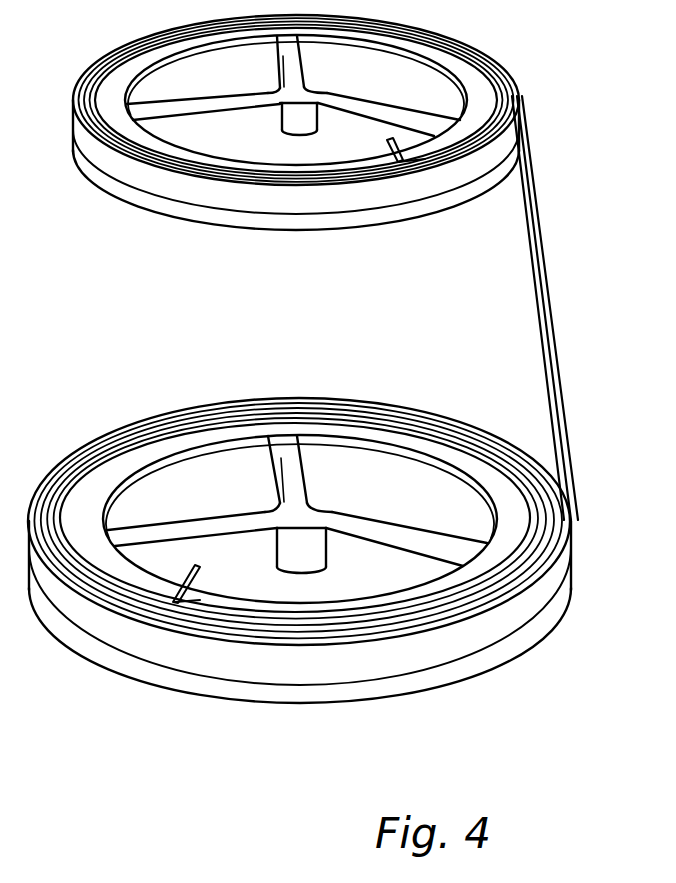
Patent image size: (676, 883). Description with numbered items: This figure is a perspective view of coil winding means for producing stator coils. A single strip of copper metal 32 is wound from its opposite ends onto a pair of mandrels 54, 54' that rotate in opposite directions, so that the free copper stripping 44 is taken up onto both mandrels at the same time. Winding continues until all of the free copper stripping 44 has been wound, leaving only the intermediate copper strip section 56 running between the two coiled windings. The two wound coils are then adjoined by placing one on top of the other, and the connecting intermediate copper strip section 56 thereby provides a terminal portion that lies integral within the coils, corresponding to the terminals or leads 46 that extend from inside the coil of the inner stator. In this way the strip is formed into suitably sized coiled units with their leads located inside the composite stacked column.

The strips or ribbons of copper metal 32 is at (540, 598).
The copper stripping 44 is at (553, 298).
The terminals or leads 46 is at (432, 182).
The mandrel 54 is at (296, 153).
The mandrel 54' is at (300, 599).
The intermediate copper strip section 56 is at (540, 376).